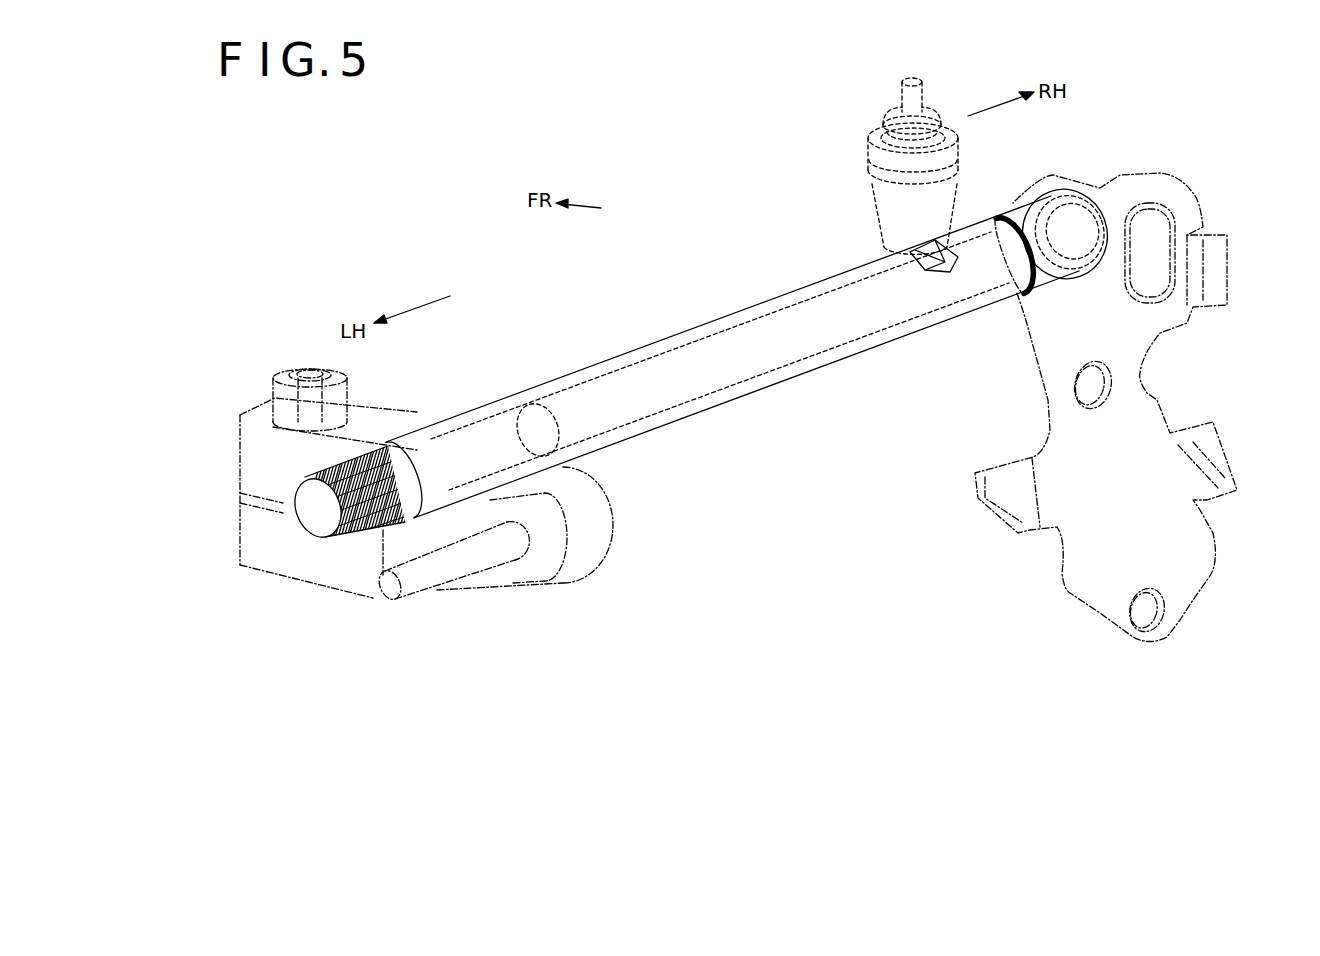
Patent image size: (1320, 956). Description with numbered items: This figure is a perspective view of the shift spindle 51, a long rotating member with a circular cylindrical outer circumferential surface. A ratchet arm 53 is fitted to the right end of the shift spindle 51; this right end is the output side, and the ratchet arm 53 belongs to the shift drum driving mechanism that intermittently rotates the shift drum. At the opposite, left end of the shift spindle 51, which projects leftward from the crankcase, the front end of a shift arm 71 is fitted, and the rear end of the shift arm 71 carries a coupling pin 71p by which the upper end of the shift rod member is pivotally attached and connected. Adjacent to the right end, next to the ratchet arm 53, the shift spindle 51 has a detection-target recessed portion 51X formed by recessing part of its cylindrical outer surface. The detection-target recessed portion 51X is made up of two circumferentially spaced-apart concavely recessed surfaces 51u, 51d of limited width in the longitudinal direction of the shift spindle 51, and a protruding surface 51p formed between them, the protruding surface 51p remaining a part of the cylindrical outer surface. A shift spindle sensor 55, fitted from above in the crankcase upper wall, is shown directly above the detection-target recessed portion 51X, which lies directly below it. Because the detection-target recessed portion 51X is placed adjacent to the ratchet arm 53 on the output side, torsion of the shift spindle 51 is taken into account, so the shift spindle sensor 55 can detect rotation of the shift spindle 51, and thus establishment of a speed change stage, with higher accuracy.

The shift spindle 51 is at (690, 329).
The detection-target recessed portion 51X is at (900, 250).
The protruding surface 51p is at (912, 252).
The concavely recessed surface 51u is at (942, 250).
The concavely recessed surface 51d is at (885, 250).
The ratchet arm 53 is at (1160, 390).
The shift spindle sensor 55 is at (875, 128).
The shift arm 71 is at (330, 585).
The coupling pin 71p is at (430, 585).